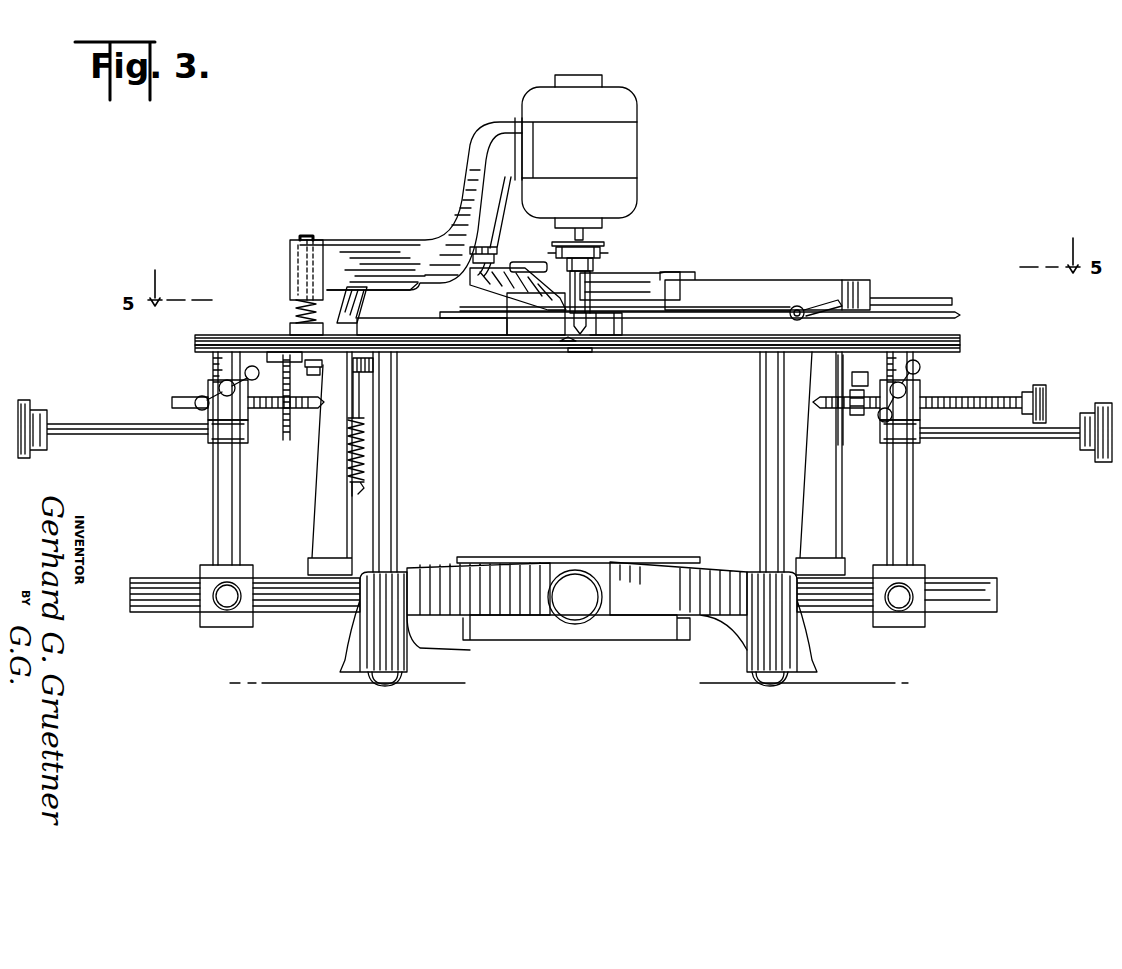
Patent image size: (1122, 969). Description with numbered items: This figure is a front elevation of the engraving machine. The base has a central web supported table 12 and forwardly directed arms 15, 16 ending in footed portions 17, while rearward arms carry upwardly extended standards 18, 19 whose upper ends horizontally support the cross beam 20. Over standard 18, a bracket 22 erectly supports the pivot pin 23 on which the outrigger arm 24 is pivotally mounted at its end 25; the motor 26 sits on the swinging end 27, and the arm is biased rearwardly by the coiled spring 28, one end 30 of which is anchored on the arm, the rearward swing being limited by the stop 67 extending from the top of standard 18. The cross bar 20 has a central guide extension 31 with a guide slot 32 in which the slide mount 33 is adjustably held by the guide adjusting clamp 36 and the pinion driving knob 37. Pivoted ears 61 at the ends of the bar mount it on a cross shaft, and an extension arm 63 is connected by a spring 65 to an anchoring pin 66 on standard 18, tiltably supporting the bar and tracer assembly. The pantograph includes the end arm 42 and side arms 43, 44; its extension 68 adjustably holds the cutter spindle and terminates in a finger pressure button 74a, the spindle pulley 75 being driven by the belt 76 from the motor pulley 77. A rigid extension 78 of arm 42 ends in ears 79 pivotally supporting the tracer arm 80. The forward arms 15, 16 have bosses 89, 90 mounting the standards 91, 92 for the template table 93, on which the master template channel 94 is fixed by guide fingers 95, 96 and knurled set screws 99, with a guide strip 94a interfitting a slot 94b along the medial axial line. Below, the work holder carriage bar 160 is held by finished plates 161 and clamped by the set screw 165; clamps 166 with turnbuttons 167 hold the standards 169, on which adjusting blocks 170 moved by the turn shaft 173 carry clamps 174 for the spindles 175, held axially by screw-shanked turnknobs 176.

The central web supported table 12 is at (554, 558).
The forwardly directed arm 15 is at (462, 594).
The forwardly directed arm 16 is at (698, 598).
The footed portion 17 is at (400, 672).
The standard 18 is at (322, 492).
The standard 19 is at (832, 485).
The cross beam 20 is at (440, 324).
The bracket 22 is at (290, 328).
The pivot pin 23 is at (308, 236).
The outrigger arm 24 is at (458, 178).
The end of outrigger arm 25 is at (300, 258).
The motor 26 is at (632, 136).
The swinging end 27 is at (518, 124).
The coiled spring 28 is at (300, 312).
The spring end 30 is at (414, 288).
The guide extension 31 is at (512, 325).
The guide slot 32 is at (594, 323).
The slide mount 33 is at (610, 326).
The guide adjusting clamp 36 is at (482, 288).
The pinion driving knob 37 is at (522, 262).
The outer end arm 42 is at (957, 314).
The inner side arm 43 is at (738, 282).
The outer side arm 44 is at (900, 298).
The pivoted ear 61 is at (373, 366).
The extension arm 63 is at (360, 394).
The spring 65 is at (362, 446).
The anchoring pin 66 is at (357, 499).
The stop 67 is at (352, 292).
The extension 68 is at (642, 280).
The finger pressure button 74a is at (488, 246).
The pulley 75 is at (596, 266).
The belt 76 is at (604, 255).
The motor pulley 77 is at (598, 244).
The extension 78 is at (828, 312).
The ear 79 is at (792, 308).
The tracer arm 80 is at (670, 312).
The boss 89 is at (388, 586).
The boss 90 is at (768, 586).
The standard 91 is at (398, 483).
The standard 92 is at (760, 463).
The template table 93 is at (694, 352).
The master template channel 94 is at (466, 352).
The guide strip 94a is at (580, 352).
The slot 94b is at (566, 340).
The guide finger 95 is at (285, 348).
The guide finger 96 is at (864, 360).
The knurled set screw 99 is at (563, 400).
The work holder carriage bar 160 is at (146, 582).
The finished plate 161 is at (466, 626).
The set screw 165 is at (570, 604).
The clamp 166 is at (206, 570).
The turnbutton 167 is at (226, 608).
The standard 169 is at (224, 498).
The adjusting block 170 is at (214, 436).
The turn shaft 173 is at (94, 426).
The clamp 174 is at (928, 382).
The spindle 175 is at (182, 396).
The screw-shanked turnknob 176 is at (935, 360).